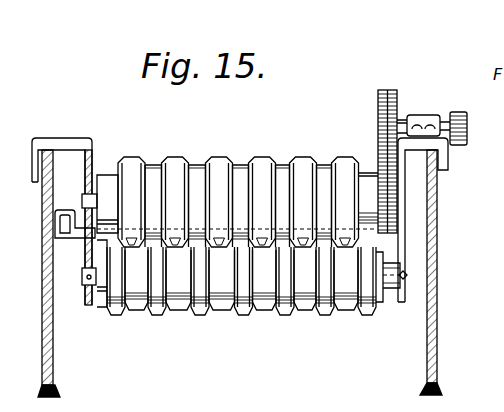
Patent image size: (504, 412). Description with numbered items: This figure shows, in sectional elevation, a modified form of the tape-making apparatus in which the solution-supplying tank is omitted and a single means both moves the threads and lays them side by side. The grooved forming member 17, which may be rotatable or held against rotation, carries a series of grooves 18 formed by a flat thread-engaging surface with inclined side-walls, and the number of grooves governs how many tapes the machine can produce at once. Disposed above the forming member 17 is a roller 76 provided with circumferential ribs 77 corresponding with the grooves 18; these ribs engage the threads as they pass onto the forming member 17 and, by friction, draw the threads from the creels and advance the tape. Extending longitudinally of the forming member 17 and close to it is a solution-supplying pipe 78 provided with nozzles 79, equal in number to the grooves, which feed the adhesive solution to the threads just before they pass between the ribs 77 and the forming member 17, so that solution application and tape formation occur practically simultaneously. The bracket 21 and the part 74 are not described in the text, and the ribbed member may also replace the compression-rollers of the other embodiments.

The hanger bracket 21 is at (92, 146).
The solution-supplying pipe 78 is at (80, 238).
The circumferential ribs 77 is at (261, 156).
The roller 76 is at (303, 156).
The nozzles 79 is at (220, 237).
The grooves 18 is at (125, 315).
The forming member 17 is at (157, 316).
The roller segment 74 is at (352, 233).